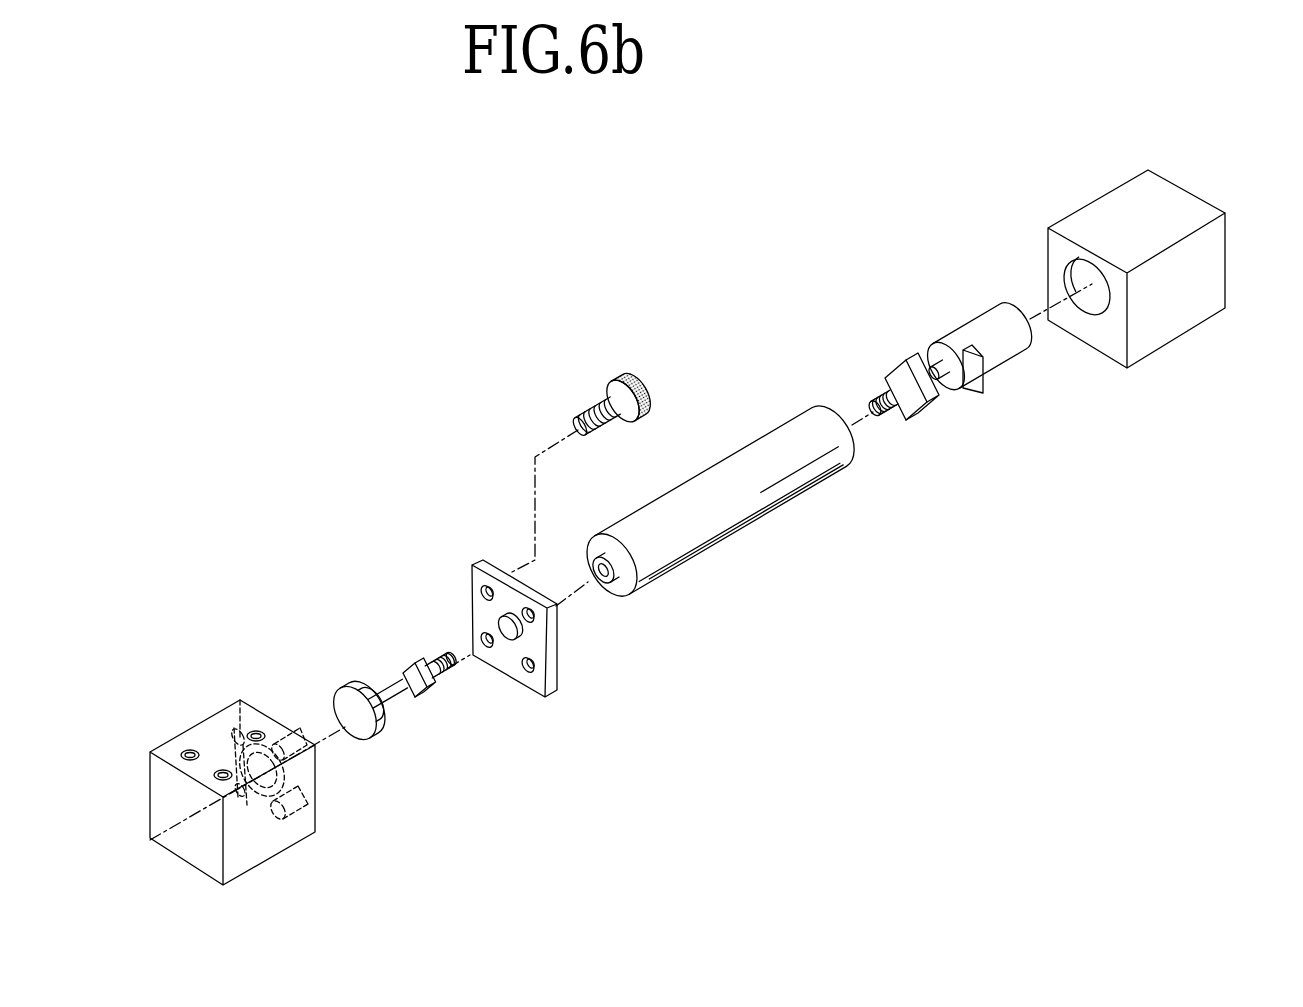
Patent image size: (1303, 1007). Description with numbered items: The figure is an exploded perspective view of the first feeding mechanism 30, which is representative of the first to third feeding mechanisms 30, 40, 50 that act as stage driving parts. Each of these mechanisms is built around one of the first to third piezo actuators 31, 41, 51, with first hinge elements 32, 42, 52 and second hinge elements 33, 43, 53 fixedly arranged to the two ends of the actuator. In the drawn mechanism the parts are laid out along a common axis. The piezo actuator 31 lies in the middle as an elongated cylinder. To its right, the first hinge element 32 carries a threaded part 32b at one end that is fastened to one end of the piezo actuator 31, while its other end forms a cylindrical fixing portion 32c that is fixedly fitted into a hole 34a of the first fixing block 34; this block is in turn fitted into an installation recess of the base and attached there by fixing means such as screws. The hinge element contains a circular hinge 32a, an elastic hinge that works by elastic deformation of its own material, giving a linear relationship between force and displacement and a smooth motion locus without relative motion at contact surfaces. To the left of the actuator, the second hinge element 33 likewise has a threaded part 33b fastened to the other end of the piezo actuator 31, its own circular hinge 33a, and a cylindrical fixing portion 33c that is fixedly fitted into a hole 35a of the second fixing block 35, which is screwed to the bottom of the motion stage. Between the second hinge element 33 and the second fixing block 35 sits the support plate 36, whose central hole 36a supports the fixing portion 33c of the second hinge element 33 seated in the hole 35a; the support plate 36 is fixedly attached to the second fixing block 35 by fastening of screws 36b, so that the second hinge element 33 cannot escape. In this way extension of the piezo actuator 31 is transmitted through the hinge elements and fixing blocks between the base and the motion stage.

The first feeding mechanism 30 is at (687, 496).
The second feeding mechanism 40 is at (687, 496).
The third feeding mechanism 50 is at (436, 440).
The first piezo actuator 31 is at (721, 473).
The second piezo actuator 41 is at (721, 473).
The third piezo actuator 51 is at (760, 453).
The first hinge element 32 is at (948, 318).
The first hinge element 42 is at (948, 318).
The first hinge element 52 is at (967, 315).
The circular hinge 32a is at (943, 387).
The threaded part 32b is at (878, 374).
The cylindrical fixing portion 32c is at (1018, 358).
The second hinge element 33 is at (360, 655).
The second hinge element 43 is at (360, 655).
The second hinge element 53 is at (390, 650).
The circular hinge 33a is at (400, 700).
The threaded part 33b is at (427, 660).
The cylindrical fixing portion 33c is at (345, 685).
The first fixing block 34 is at (1117, 217).
The hole 34a is at (1097, 307).
The second fixing block 35 is at (203, 733).
The hole 35a is at (276, 745).
The support plate 36 is at (485, 562).
The hole 36a is at (500, 650).
The screws 36b is at (598, 400).